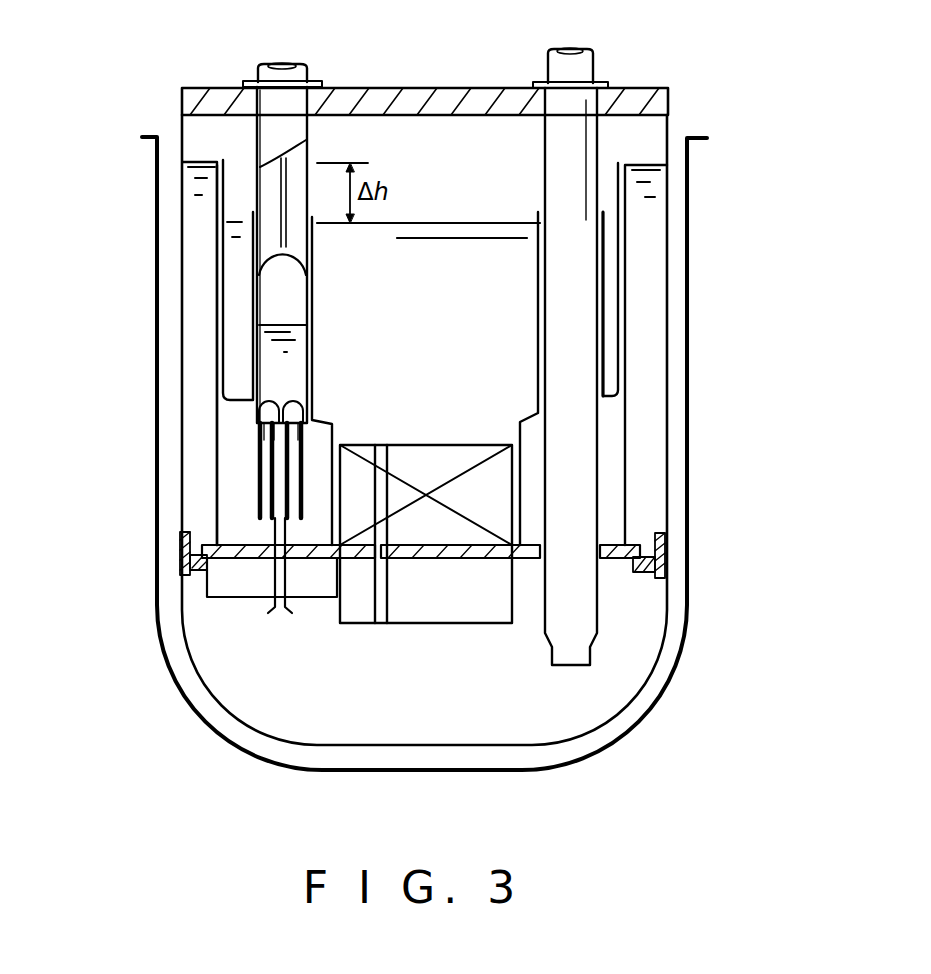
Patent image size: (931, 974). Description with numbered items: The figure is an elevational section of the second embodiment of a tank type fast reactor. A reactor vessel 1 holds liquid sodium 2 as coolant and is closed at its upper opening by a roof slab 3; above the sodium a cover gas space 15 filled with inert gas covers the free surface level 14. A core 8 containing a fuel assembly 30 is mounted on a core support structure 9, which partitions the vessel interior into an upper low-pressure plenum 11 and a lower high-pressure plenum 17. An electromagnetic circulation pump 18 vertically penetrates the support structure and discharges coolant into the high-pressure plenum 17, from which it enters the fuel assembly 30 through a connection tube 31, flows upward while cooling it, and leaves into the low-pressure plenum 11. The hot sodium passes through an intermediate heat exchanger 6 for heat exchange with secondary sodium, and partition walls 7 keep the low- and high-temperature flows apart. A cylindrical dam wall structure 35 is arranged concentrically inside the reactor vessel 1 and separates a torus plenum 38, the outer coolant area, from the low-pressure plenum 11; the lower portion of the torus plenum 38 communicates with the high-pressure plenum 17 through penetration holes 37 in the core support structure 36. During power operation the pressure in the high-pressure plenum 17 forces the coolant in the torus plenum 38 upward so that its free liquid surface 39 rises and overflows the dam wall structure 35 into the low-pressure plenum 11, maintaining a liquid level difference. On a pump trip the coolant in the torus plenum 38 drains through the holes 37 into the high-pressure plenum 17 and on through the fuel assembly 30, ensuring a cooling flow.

The reactor vessel 1 is at (667, 242).
The liquid sodium 2 is at (517, 315).
The roof slab 3 is at (635, 88).
The intermediate heat exchanger 6 is at (600, 425).
The partition wall 7 is at (224, 373).
The core 8 is at (500, 502).
The core support structure 9 is at (603, 555).
The low-pressure plenum 11 is at (217, 247).
The free surface level 14 is at (513, 223).
The cover gas space 15 is at (639, 133).
The high-pressure plenum 17 is at (292, 712).
The electromagnetic circulation pump 18 is at (254, 433).
The fuel assembly 30 is at (373, 501).
The connection tube 31 is at (373, 602).
The dam wall structure 35 is at (221, 291).
The core support structure 36 is at (664, 555).
The penetration hole 37 is at (192, 568).
The torus plenum 38 is at (199, 270).
The free liquid surface 39 is at (197, 162).